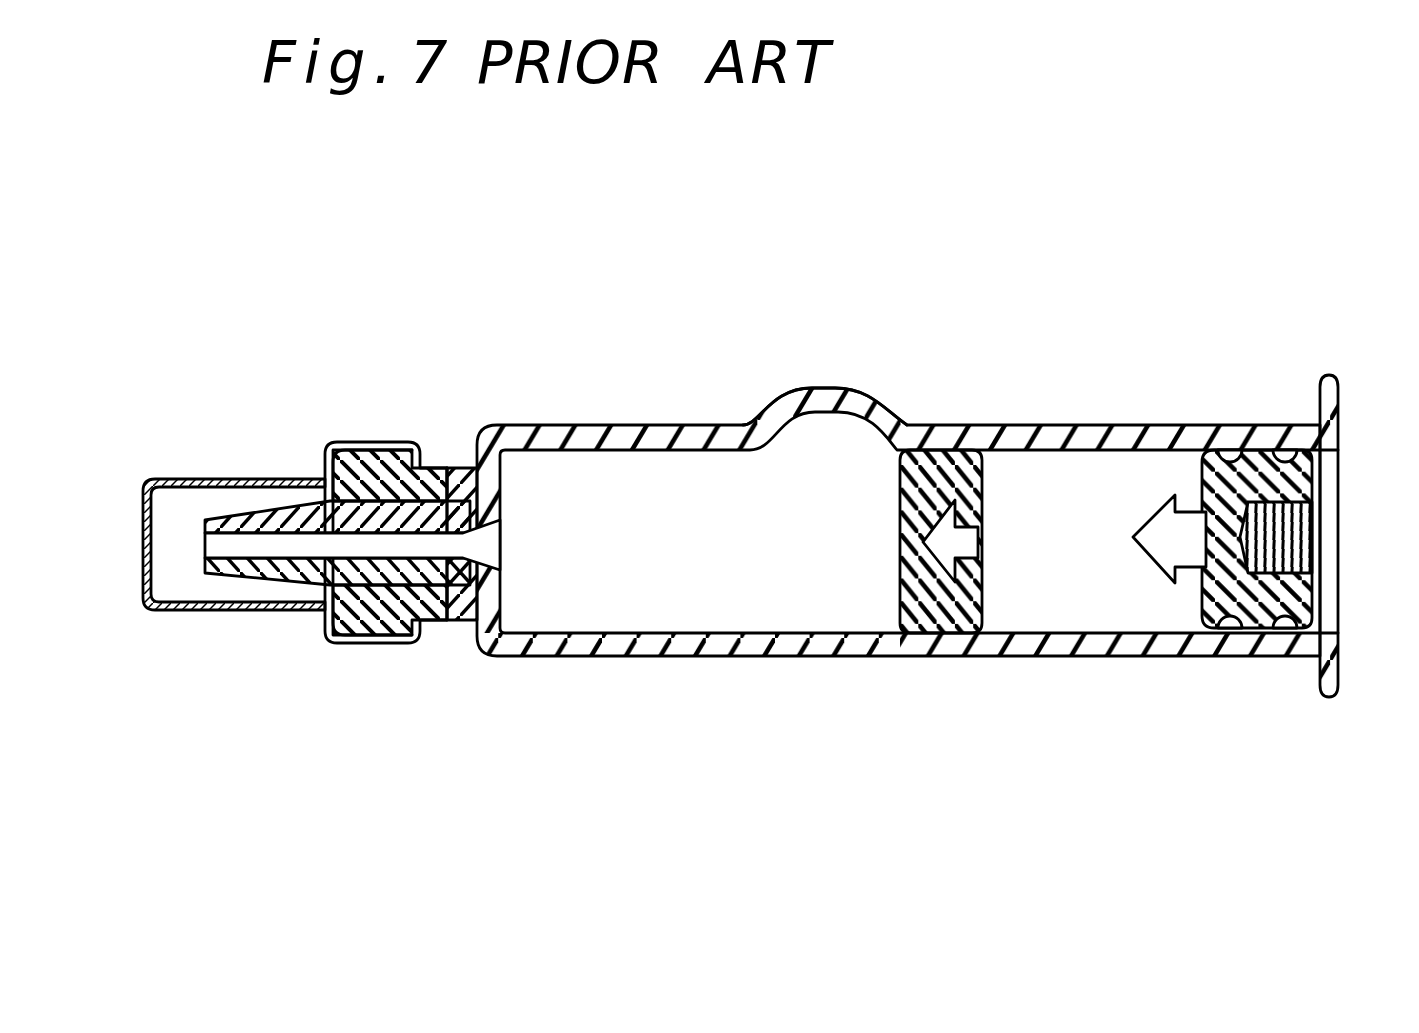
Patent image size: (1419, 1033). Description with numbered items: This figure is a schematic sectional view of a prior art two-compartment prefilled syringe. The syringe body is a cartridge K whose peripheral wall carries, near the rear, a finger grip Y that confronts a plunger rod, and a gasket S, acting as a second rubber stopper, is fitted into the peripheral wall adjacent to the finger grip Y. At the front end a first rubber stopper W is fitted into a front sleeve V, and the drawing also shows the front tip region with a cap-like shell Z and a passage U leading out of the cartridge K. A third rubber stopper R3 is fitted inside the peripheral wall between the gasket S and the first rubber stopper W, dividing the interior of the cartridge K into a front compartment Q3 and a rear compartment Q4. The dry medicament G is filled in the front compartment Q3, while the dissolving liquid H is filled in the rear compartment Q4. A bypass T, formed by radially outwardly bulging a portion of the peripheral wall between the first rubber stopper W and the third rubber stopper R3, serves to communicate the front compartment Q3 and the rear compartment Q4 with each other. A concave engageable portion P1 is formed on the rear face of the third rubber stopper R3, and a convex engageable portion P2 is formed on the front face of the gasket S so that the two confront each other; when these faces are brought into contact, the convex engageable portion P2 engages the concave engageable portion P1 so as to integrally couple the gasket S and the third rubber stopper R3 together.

The cartridge K is at (540, 657).
The bypass T is at (796, 392).
The finger grip Y is at (1339, 690).
The first rubber stopper W is at (457, 455).
The tip cap shell Z is at (244, 612).
The front sleeve V is at (348, 424).
The nozzle passage U is at (502, 545).
The front compartment Q3 is at (760, 600).
The dry medicament G is at (858, 525).
The third rubber stopper R3 is at (952, 450).
The concave engageable portion P1 is at (983, 517).
The rear compartment Q4 is at (1102, 600).
The dissolving liquid H is at (1018, 595).
The gasket S is at (1255, 610).
The convex engageable portion P2 is at (1153, 522).